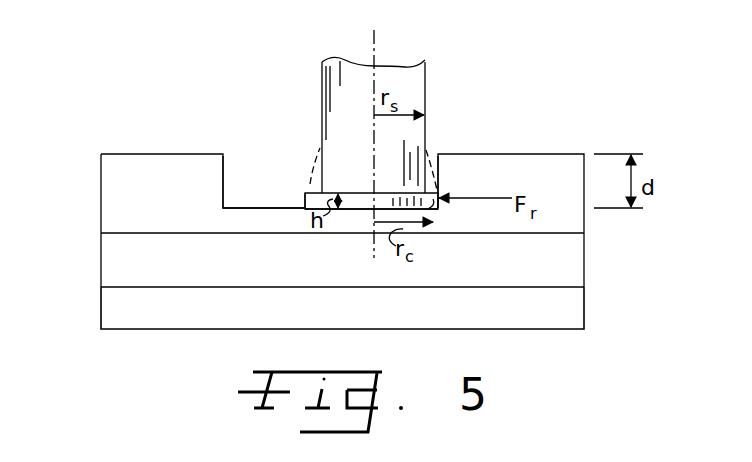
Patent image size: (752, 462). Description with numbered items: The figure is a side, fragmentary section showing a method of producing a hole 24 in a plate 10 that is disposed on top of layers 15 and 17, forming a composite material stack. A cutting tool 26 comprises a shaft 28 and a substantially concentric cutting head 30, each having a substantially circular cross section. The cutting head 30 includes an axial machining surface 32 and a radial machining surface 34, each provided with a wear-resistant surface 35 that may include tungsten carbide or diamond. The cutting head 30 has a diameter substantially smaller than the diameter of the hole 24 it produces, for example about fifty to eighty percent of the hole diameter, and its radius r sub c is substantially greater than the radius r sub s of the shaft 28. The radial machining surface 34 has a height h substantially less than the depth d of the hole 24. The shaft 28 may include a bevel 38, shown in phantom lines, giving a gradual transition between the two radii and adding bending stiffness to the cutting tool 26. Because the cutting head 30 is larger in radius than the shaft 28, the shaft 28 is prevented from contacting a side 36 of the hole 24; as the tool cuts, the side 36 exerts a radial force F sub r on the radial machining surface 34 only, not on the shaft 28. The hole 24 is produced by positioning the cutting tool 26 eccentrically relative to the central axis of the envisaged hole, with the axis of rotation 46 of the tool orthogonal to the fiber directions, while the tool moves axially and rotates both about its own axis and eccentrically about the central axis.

The plate 10 is at (110, 185).
The layer 15 is at (112, 248).
The layer 17 is at (110, 296).
The hole 24 is at (277, 182).
The cutting tool 26 is at (297, 51).
The shaft 28 is at (417, 80).
The cutting head 30 is at (305, 197).
The axial machining surface 32 is at (362, 210).
The radial machining surface 34 is at (438, 193).
The wear-resistant surface 35 is at (345, 210).
The side of hole 36 is at (440, 209).
The bevel 38 is at (311, 167).
The axis of rotation 46 is at (374, 55).